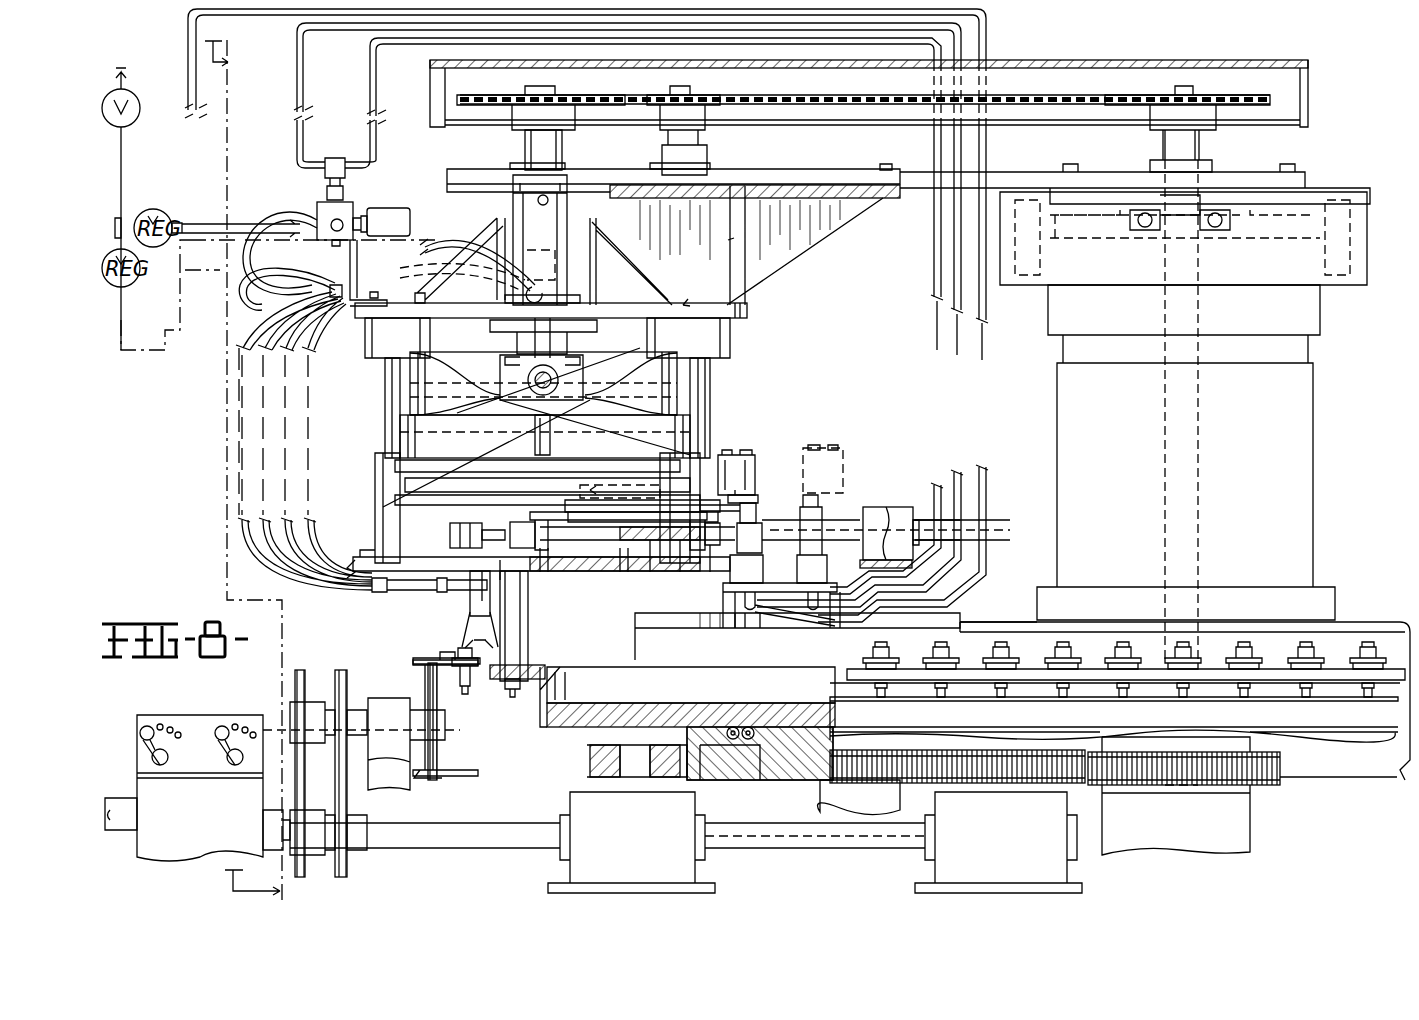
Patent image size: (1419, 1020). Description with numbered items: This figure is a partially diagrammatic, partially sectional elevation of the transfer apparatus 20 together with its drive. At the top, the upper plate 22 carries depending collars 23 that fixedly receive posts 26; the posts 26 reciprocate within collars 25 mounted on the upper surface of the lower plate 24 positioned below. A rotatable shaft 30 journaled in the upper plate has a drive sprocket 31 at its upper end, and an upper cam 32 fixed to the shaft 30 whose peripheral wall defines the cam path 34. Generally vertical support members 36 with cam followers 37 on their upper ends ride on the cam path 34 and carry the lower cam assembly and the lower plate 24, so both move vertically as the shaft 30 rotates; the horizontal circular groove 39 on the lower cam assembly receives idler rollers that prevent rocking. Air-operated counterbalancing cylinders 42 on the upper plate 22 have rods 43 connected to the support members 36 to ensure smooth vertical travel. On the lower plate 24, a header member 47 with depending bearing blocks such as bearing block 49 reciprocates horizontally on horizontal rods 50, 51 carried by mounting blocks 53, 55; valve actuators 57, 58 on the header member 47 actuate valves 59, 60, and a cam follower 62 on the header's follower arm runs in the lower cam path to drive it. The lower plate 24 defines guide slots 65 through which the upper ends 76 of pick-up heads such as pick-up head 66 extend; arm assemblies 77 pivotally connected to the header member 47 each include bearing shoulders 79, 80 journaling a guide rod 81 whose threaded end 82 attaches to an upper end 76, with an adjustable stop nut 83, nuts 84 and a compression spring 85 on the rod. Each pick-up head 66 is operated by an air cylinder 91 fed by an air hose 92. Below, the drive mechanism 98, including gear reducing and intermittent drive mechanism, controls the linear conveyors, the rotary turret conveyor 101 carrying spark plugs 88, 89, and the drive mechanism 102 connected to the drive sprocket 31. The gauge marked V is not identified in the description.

The transfer apparatus 20 is at (685, 305).
The upper plate 22 is at (747, 315).
The depending collars 23 is at (372, 345).
The lower plate 24 is at (350, 560).
The collars 25 is at (372, 460).
The posts 26 is at (385, 392).
The rotatable shaft 30 is at (562, 155).
The drive sprocket 31 is at (580, 98).
The upper cam 32 is at (634, 384).
The cam path 34 is at (638, 360).
The support members 36 is at (458, 434).
The cam followers 37 is at (535, 372).
The horizontal circular groove 39 is at (482, 470).
The counterbalancing cylinders 42 is at (567, 220).
The rods 43 is at (520, 335).
The header member 47 is at (755, 468).
The bearing block 49 is at (757, 513).
The horizontal rod 50 is at (865, 505).
The horizontal rod 51 is at (868, 550).
The mounting block 53 is at (896, 510).
The mounting block 55 is at (913, 512).
The valve actuator 57 is at (712, 500).
The valve actuator 58 is at (758, 499).
The valve 59 is at (762, 535).
The valve 60 is at (822, 535).
The cam follower 62 is at (640, 485).
The guide slots 65 is at (530, 570).
The pick-up head 66 is at (466, 605).
The upper ends 76 is at (440, 537).
The arm assemblies 77 is at (601, 545).
The bearing shoulder 79 is at (548, 560).
The bearing shoulder 80 is at (625, 562).
The guide rod 81 is at (652, 565).
The threaded end 82 is at (535, 522).
The adjustable stop nut 83 is at (525, 525).
The nuts 84 is at (712, 570).
The compression spring 85 is at (683, 565).
The spark plugs 88 is at (455, 652).
The spark plugs 89 is at (880, 648).
The air cylinder 91 is at (385, 590).
The air hose 92 is at (268, 552).
The drive mechanism 98 is at (534, 814).
The rotary turret conveyor 101 is at (1340, 660).
The drive mechanism 102 is at (700, 100).
The vacuum gauge V is at (121, 209).